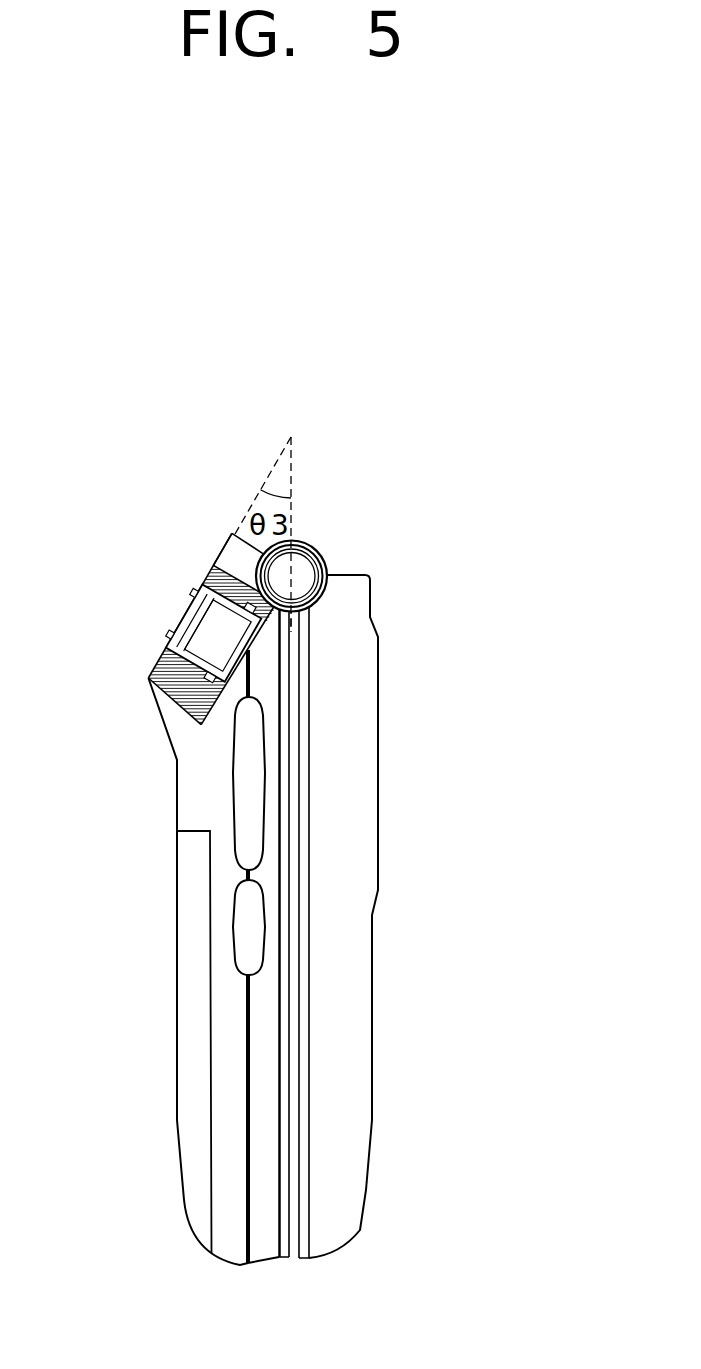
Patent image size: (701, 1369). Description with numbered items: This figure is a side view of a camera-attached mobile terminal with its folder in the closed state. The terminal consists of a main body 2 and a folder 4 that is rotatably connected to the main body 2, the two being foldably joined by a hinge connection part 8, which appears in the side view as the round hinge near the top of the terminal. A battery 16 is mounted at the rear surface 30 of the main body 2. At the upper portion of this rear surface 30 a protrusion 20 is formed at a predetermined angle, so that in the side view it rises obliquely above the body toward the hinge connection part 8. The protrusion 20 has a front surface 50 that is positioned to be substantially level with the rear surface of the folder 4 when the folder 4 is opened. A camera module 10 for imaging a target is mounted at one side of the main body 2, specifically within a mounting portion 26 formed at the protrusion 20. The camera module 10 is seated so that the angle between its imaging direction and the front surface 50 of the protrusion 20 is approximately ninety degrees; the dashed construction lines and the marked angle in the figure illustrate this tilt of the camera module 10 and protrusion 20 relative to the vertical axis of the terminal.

The main body 2 is at (260, 1245).
The folder 4 is at (350, 1022).
The hinge connection part 8 is at (297, 564).
The camera module 10 is at (180, 620).
The battery 16 is at (195, 967).
The protrusion 20 is at (149, 681).
The mounting portion 26 is at (227, 683).
The rear surface 30 is at (212, 1078).
The front surface of the protrusion 50 is at (226, 548).